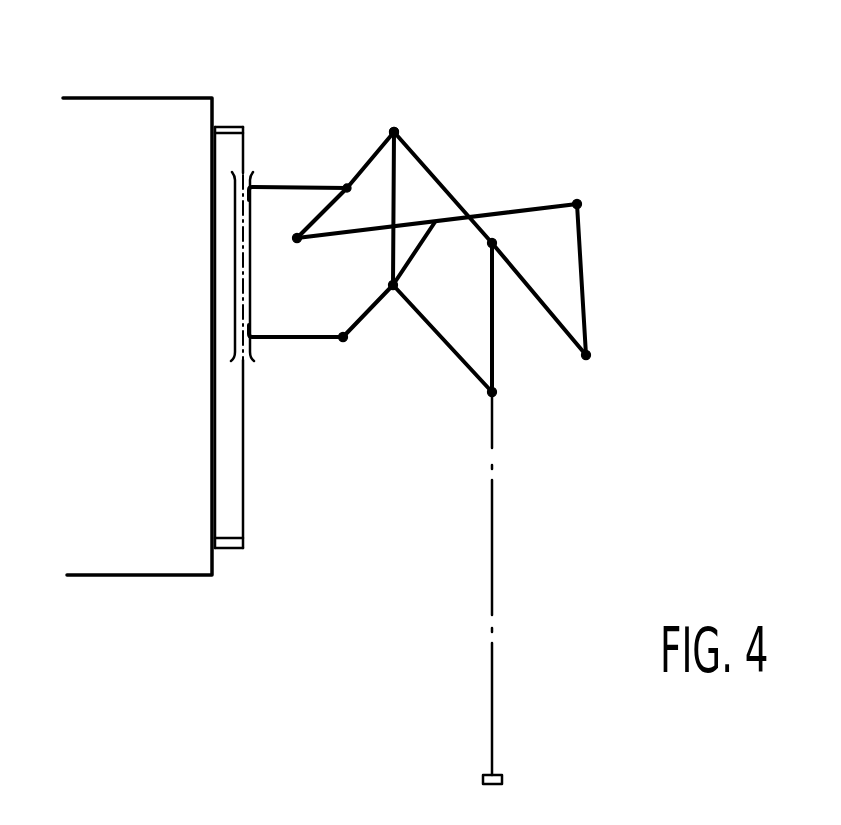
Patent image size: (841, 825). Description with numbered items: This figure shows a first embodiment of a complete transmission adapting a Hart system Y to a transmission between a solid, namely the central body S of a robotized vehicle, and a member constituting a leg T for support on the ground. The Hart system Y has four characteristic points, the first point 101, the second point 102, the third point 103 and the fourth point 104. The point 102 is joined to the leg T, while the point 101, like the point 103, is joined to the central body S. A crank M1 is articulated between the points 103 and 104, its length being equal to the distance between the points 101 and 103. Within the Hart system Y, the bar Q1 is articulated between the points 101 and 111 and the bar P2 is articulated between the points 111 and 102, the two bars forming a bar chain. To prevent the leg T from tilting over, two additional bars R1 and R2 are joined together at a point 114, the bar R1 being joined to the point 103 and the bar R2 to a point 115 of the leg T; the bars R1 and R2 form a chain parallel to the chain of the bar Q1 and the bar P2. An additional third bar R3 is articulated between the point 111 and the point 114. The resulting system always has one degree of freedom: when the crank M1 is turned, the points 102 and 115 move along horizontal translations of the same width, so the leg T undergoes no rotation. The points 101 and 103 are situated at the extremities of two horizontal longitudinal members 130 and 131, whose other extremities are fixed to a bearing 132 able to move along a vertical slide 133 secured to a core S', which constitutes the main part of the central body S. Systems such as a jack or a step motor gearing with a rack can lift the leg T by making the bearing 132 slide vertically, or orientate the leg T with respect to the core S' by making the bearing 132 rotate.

The first point 101 is at (340, 181).
The second point 102 is at (527, 233).
The third point 103 is at (343, 345).
The fourth point 104 is at (433, 222).
The articulation point of bars Q1 and P2 111 is at (398, 133).
The junction point of bars R1 and R2 114 is at (407, 286).
The sixth point 115 is at (497, 393).
The horizontal longitudinal member 130 is at (267, 187).
The horizontal longitudinal member 131 is at (278, 338).
The bearing 132 is at (237, 281).
The vertical slide 133 is at (243, 488).
The additional bar R1 is at (387, 291).
The additional bar R2 is at (447, 355).
The additional third bar R3 is at (397, 168).
The bar P2 is at (453, 200).
The crank M1 is at (413, 221).
The bar Q1 is at (368, 164).
The leg T is at (492, 582).
The Hart system Y is at (597, 147).
The central body S is at (167, 628).
The core S' is at (97, 609).